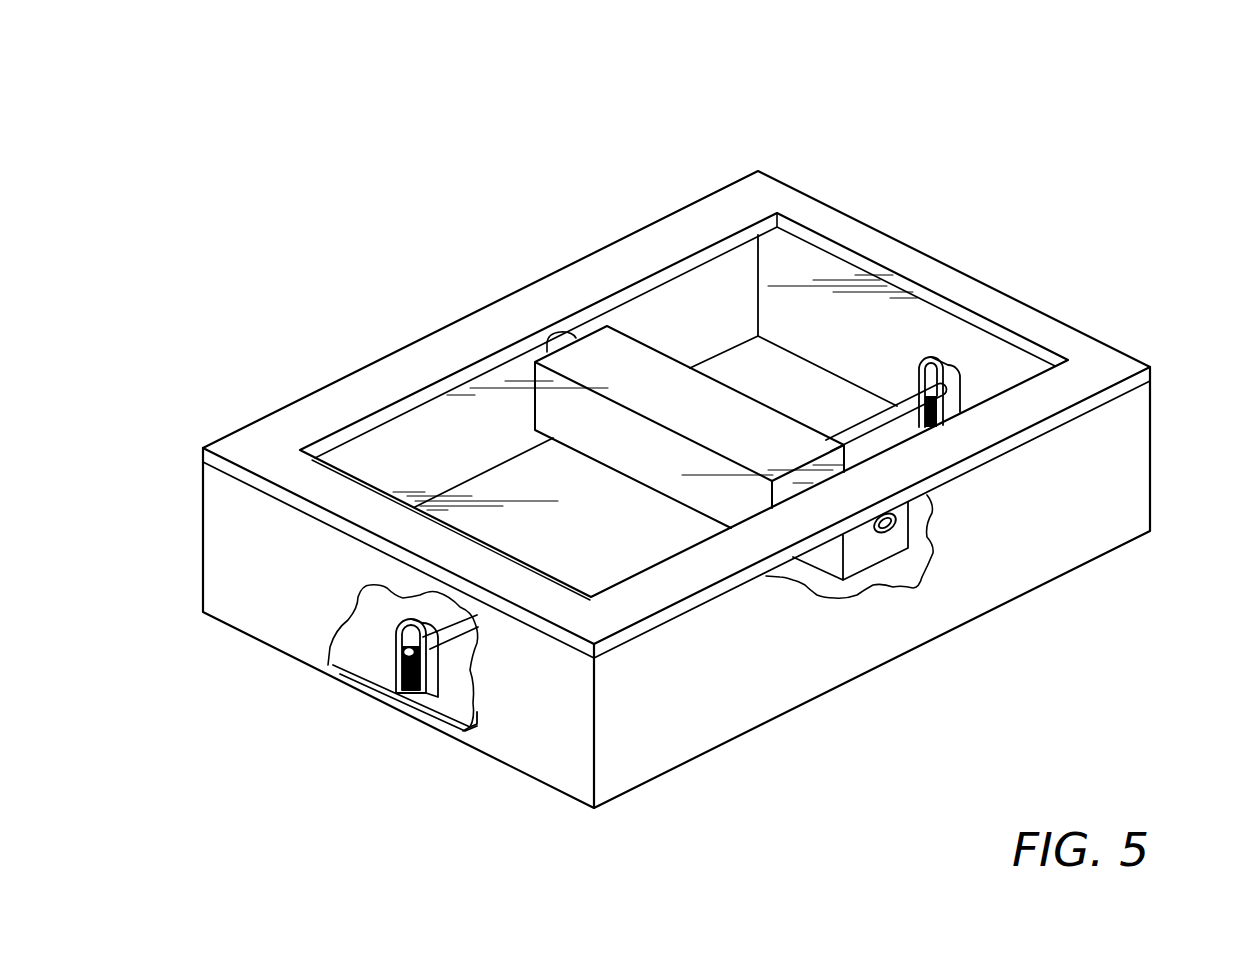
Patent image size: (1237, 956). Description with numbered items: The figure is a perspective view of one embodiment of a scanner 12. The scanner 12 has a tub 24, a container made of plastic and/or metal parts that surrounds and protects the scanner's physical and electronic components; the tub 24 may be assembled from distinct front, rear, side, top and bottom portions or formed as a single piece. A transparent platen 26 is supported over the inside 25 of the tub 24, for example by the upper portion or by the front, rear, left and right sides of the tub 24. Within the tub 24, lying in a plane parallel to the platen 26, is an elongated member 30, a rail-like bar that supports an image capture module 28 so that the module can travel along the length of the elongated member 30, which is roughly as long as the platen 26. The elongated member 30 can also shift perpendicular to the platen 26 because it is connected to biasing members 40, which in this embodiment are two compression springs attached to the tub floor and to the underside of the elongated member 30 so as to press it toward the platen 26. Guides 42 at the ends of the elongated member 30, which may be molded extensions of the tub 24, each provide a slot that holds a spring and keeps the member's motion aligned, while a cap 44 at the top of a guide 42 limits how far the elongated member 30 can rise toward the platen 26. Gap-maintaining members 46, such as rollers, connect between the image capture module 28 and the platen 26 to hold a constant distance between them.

The scanner 12 is at (1046, 158).
The tub 24 is at (883, 243).
The inside of the tub 25 is at (708, 288).
The transparent platen 26 is at (406, 437).
The image capture module 28 is at (607, 350).
The elongated member 30 is at (887, 417).
The biasing members 40 is at (962, 422).
The guides 42 is at (435, 676).
The cap 44 is at (404, 652).
The gap-maintaining members 46 is at (547, 342).